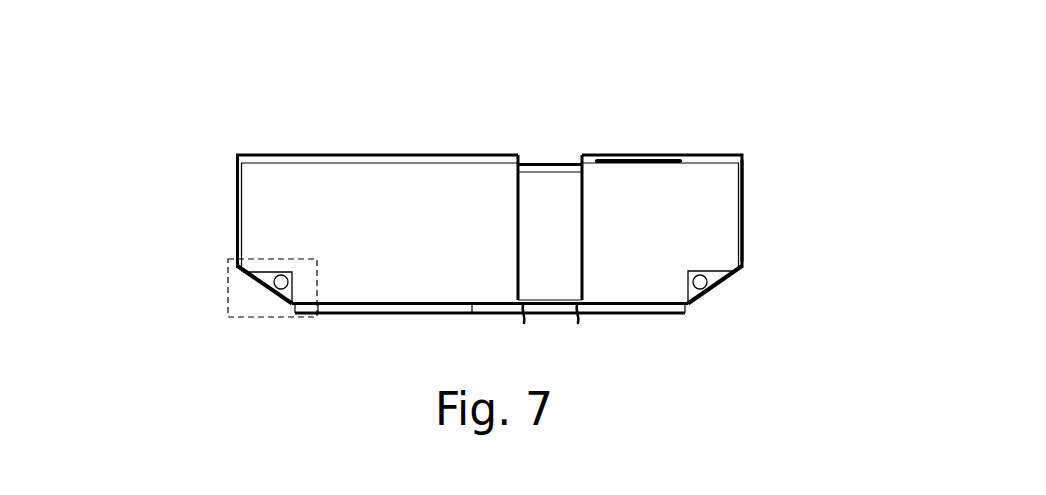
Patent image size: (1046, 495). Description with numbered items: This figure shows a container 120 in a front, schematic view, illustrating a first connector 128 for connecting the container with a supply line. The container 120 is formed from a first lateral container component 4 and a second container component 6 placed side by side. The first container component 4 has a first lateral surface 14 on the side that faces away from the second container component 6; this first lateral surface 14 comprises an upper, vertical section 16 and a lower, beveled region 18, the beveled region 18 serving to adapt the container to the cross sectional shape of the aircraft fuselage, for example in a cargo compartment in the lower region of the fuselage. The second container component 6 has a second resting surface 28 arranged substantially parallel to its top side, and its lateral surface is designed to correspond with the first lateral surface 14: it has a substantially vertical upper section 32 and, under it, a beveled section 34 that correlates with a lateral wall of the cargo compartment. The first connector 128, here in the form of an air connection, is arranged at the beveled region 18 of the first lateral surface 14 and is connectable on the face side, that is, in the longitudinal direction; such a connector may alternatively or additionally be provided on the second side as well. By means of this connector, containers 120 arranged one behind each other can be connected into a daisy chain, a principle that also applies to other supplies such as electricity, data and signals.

The first lateral container component 4 is at (459, 104).
The second container component 6 is at (694, 107).
The container 120 is at (564, 112).
The first lateral surface 14 is at (176, 238).
The upper, vertical section 16 is at (227, 155).
The lower, beveled region 18 is at (218, 260).
The first connector 128 is at (282, 275).
The second resting surface 28 is at (820, 221).
The upper section 32 is at (754, 156).
The beveled section 34 is at (759, 263).